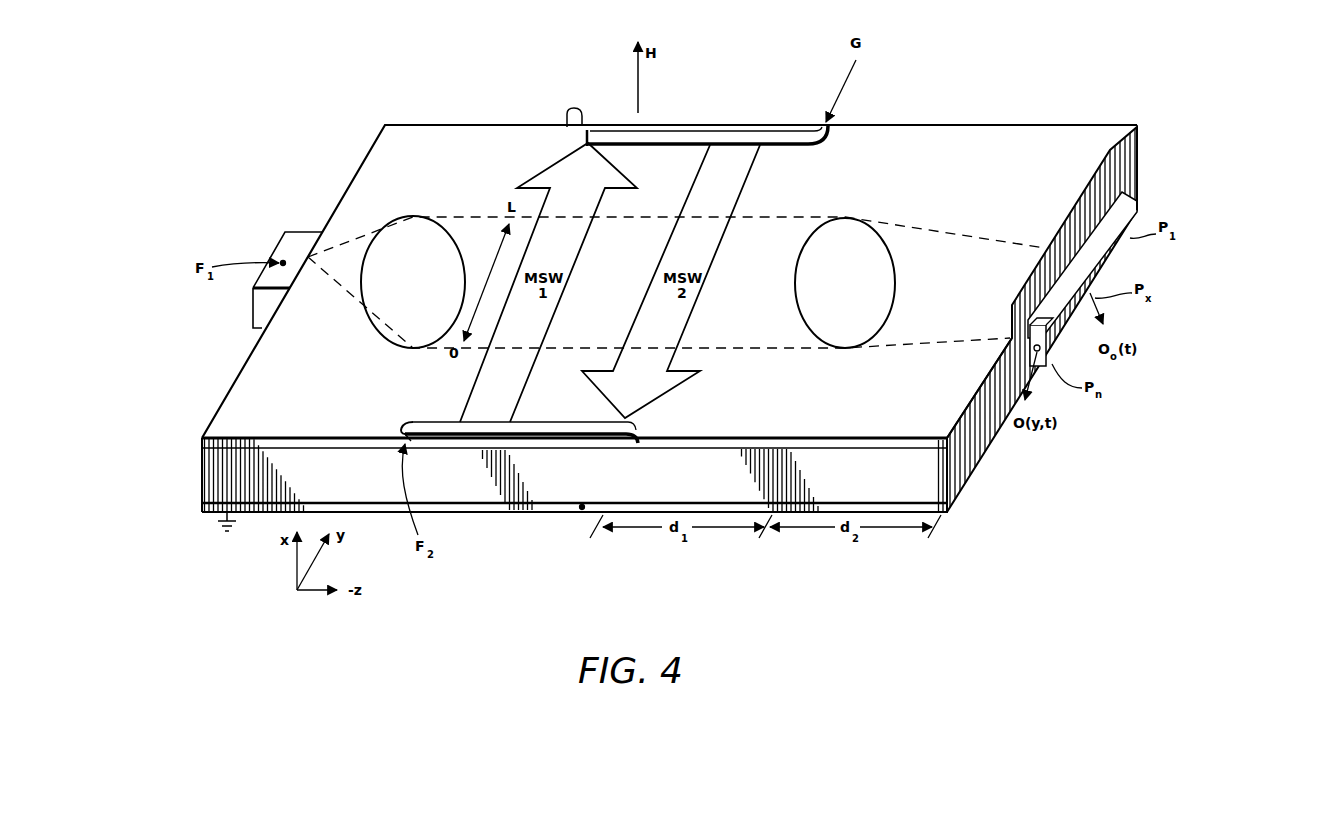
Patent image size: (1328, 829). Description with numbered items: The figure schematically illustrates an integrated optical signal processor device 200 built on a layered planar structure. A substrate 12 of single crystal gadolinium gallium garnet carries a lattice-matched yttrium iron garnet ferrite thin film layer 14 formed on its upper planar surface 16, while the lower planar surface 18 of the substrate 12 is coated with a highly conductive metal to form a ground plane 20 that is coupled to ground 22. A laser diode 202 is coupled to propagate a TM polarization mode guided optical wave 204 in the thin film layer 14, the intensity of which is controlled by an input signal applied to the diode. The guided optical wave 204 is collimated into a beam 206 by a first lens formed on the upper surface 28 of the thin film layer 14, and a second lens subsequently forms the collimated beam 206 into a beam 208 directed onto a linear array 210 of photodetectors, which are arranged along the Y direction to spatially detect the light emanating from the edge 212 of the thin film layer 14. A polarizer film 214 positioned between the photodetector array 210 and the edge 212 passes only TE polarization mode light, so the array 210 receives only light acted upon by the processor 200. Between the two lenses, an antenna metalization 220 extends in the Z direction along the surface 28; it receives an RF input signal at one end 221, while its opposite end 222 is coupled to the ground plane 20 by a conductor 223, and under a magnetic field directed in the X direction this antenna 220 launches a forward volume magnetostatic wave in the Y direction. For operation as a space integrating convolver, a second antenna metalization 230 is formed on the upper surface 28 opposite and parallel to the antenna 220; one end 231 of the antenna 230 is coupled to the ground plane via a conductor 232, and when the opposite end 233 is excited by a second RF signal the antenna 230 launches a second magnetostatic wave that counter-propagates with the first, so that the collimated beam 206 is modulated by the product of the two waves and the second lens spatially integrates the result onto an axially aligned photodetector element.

The optical signal processor device 200 is at (302, 100).
The laser diode 202 is at (293, 246).
The guided optical wave 204 is at (364, 234).
The collimated beam 206 is at (460, 224).
The beam 208 is at (948, 242).
The linear array of photodetectors 210 is at (1222, 289).
The edge of the thin film layer 212 is at (1078, 300).
The polarizer film 214 is at (1090, 170).
The antenna metalization 220 is at (541, 424).
The end of the antenna 221 is at (407, 438).
The opposite end of the antenna 222 is at (642, 437).
The conductor 223 is at (582, 506).
The second antenna metalization 230 is at (711, 130).
The end of the second antenna 231 is at (585, 142).
The conductor 232 is at (580, 118).
The opposite end of the second antenna 233 is at (828, 132).
The substrate 12 is at (202, 475).
The thin film layer 14 is at (202, 440).
The upper planar surface 16 is at (202, 448).
The lower planar surface 18 is at (202, 500).
The ground plane 20 is at (202, 511).
The ground 22 is at (216, 524).
The upper surface of the thin film layer 28 is at (304, 421).